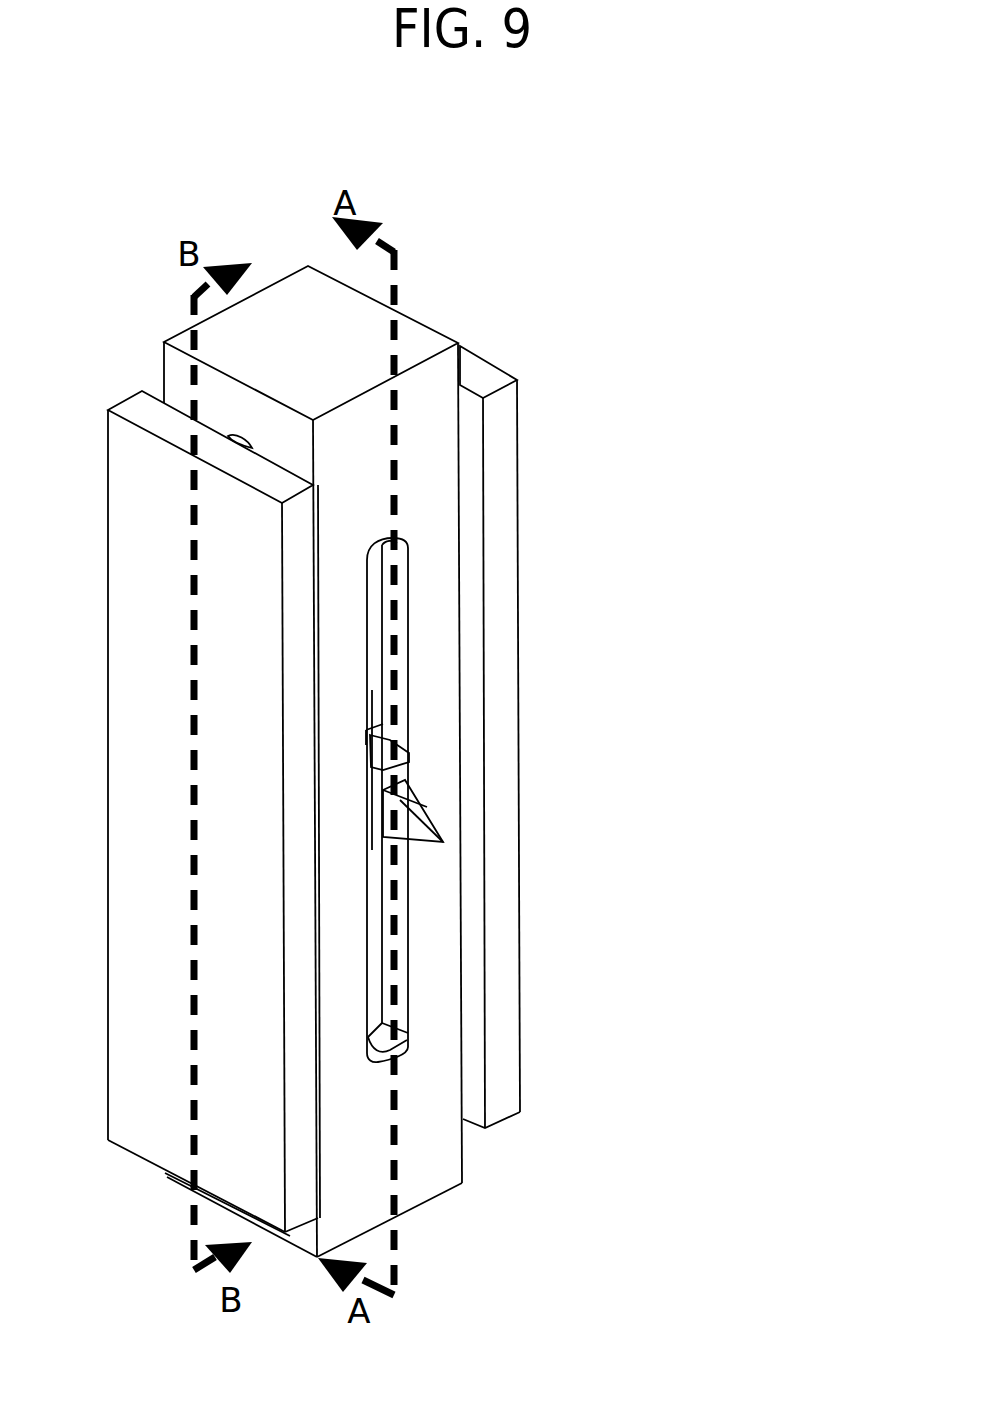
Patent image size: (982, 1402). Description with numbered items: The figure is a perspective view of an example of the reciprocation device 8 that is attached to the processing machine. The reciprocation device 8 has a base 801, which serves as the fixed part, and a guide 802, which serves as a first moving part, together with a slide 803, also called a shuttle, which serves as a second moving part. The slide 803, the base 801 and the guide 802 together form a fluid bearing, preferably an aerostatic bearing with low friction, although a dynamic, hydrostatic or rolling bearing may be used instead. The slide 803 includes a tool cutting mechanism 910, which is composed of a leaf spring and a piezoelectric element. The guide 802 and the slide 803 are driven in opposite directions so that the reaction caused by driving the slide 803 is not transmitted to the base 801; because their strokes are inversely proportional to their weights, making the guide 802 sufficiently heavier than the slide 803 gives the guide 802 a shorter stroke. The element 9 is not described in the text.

The reciprocation device 8 is at (645, 272).
The base 801 is at (518, 397).
The guide 802 is at (387, 327).
The slide 803 is at (373, 722).
The tool cutting mechanism 910 is at (390, 752).
The sensor 9 is at (415, 811).